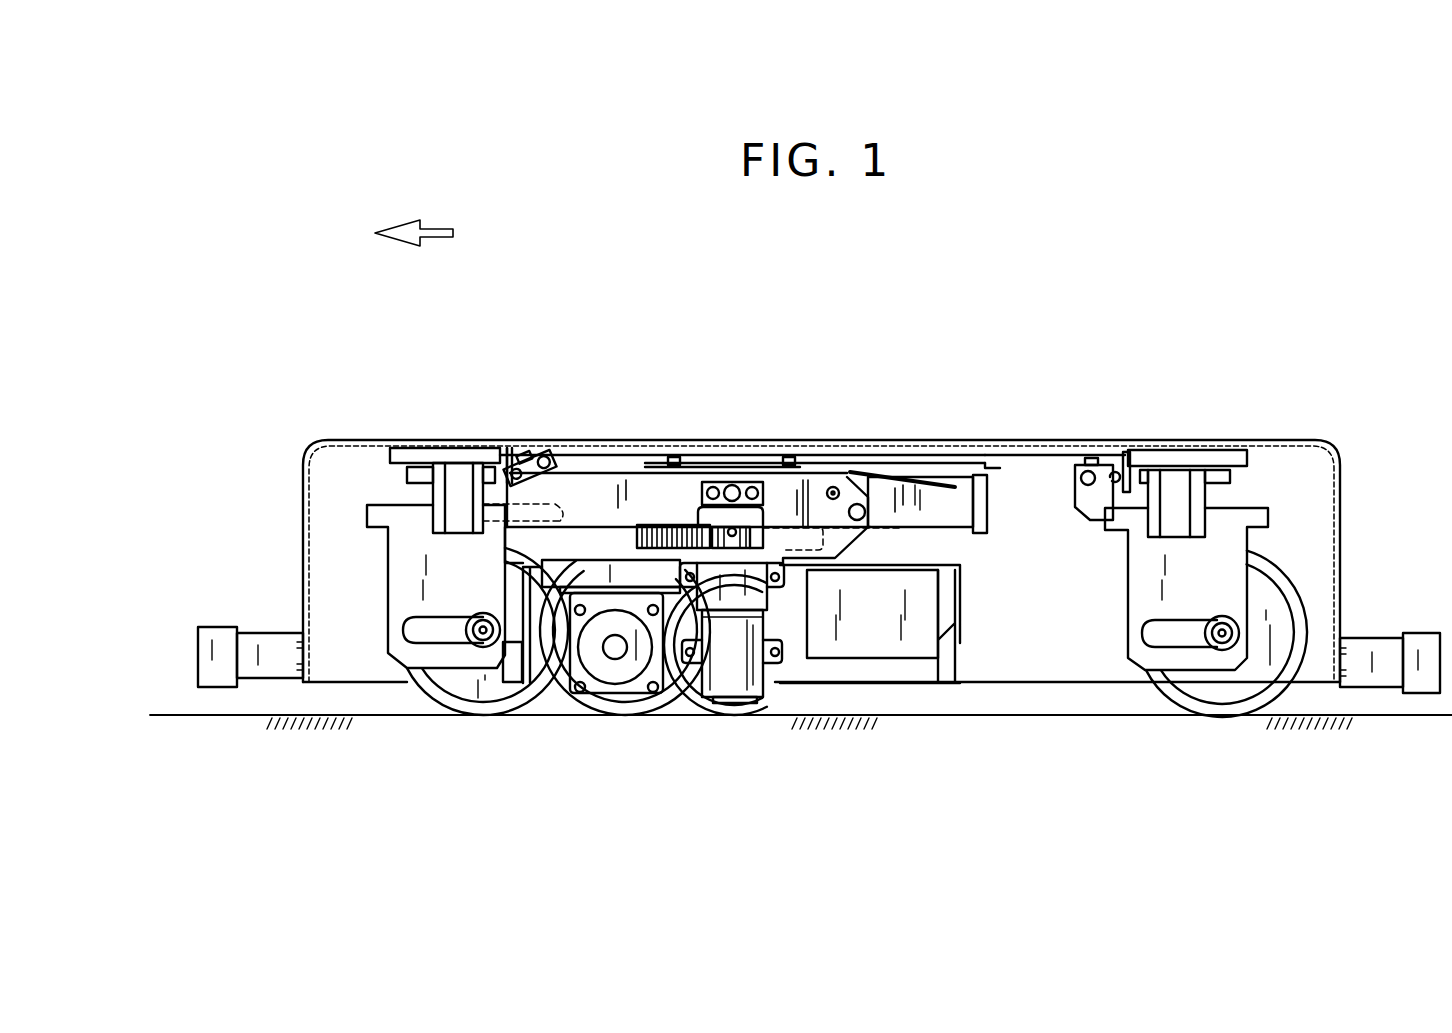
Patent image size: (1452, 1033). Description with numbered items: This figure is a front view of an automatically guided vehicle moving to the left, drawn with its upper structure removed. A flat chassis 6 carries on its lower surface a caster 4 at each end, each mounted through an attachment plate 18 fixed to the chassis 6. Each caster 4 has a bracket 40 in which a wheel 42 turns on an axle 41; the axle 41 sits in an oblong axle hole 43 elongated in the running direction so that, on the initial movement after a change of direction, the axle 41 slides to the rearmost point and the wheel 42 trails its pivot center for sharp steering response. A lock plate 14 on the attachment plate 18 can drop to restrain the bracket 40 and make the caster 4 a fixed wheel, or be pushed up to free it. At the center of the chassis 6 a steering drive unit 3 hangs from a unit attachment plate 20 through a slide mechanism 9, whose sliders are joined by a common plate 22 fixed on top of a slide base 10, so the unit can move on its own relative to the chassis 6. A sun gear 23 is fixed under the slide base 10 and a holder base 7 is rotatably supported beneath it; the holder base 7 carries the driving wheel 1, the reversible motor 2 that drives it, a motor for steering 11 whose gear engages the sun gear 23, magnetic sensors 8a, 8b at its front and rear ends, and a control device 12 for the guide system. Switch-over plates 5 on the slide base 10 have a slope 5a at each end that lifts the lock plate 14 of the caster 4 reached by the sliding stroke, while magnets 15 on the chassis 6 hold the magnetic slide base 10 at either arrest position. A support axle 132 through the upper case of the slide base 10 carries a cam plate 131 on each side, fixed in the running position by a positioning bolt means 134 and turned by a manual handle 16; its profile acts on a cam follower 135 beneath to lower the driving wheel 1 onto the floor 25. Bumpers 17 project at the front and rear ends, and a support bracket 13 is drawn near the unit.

The driving wheel 1 is at (740, 703).
The reversible motor 2 is at (620, 690).
The steering drive unit 3 is at (990, 607).
The caster 4 is at (824, 642).
The switch-over plate 5 is at (558, 572).
The slope 5a is at (937, 478).
The chassis 6 is at (1037, 433).
The holder base 7 is at (602, 497).
The magnetic sensor 8a is at (512, 683).
The magnetic sensor 8b is at (948, 665).
The slide mechanism 9 is at (731, 439).
The slide base 10 is at (623, 485).
The motor for steering 11 is at (778, 683).
The control device 12 is at (918, 647).
The support bracket 13 is at (870, 553).
The lock plate 14 is at (522, 470).
The magnet 15 is at (455, 488).
The manual handle 16 is at (858, 505).
The bumper 17 is at (215, 628).
The attachment plate 18 is at (415, 450).
The unit attachment plate 20 is at (1037, 460).
The common plate 22 is at (698, 462).
The sun gear 23 is at (637, 535).
The floor 25 is at (183, 713).
The bracket 40 is at (405, 548).
The axle 41 is at (483, 620).
The wheel 42 is at (470, 690).
The axle hole 43 is at (415, 627).
The cam plate 131 is at (793, 486).
The support axle 132 is at (741, 480).
The positioning bolt means 134 is at (836, 487).
The cam follower 135 is at (700, 520).